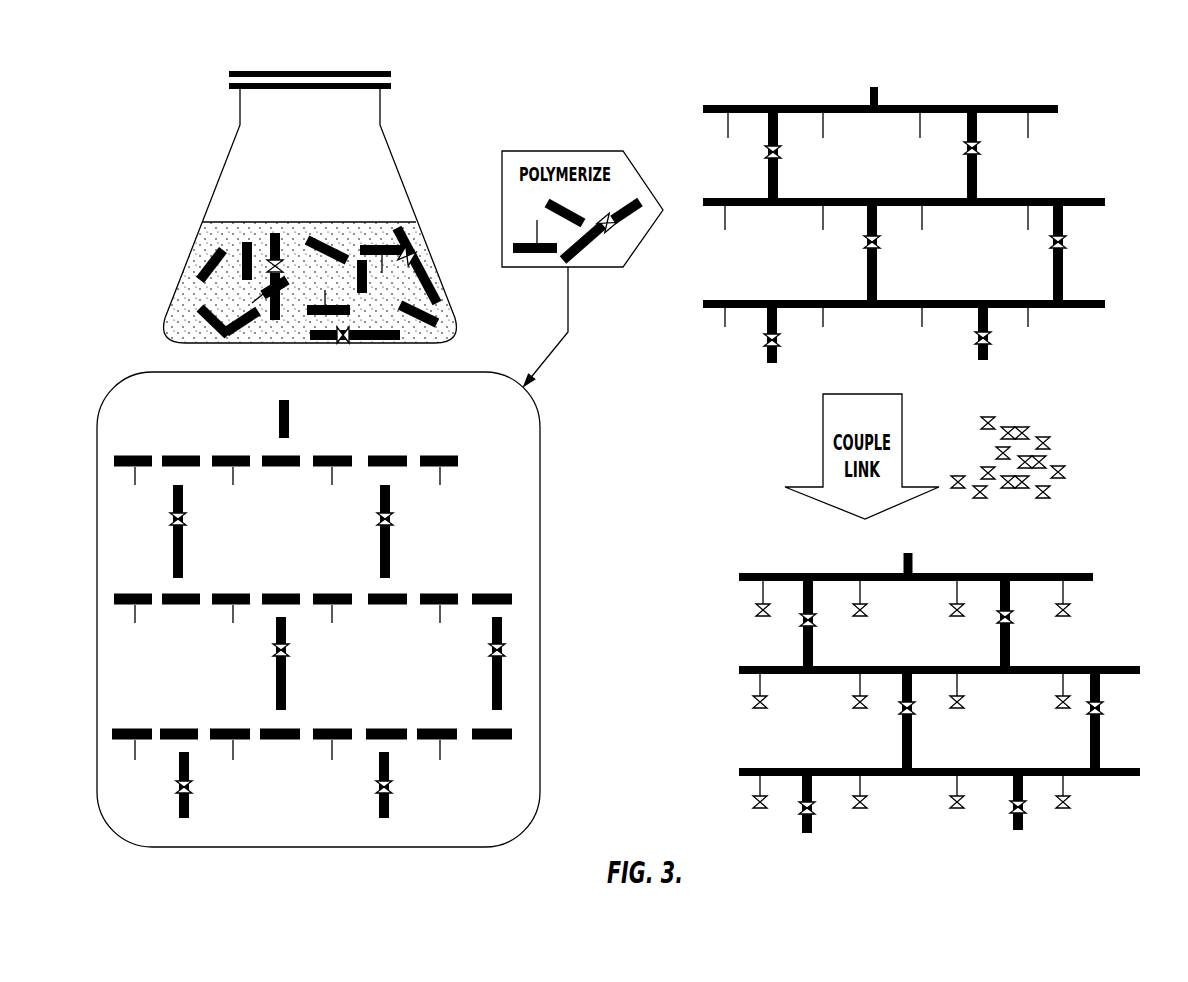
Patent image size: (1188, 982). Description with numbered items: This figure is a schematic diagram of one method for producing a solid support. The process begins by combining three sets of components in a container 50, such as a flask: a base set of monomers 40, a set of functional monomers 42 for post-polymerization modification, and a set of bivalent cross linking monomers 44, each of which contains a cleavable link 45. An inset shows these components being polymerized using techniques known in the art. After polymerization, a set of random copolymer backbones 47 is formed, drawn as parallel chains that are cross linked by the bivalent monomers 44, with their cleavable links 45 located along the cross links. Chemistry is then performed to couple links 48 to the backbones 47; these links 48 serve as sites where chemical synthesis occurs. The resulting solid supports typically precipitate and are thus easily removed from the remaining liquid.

The base set of monomers 40 is at (315, 240).
The set of functional monomers 42 is at (212, 252).
The set of bivalent cross linking monomers 44 is at (278, 238).
The cleavable link 45 is at (412, 256).
The random copolymer backbones 47 is at (945, 105).
The links 48 is at (1065, 472).
The container 50 is at (399, 167).